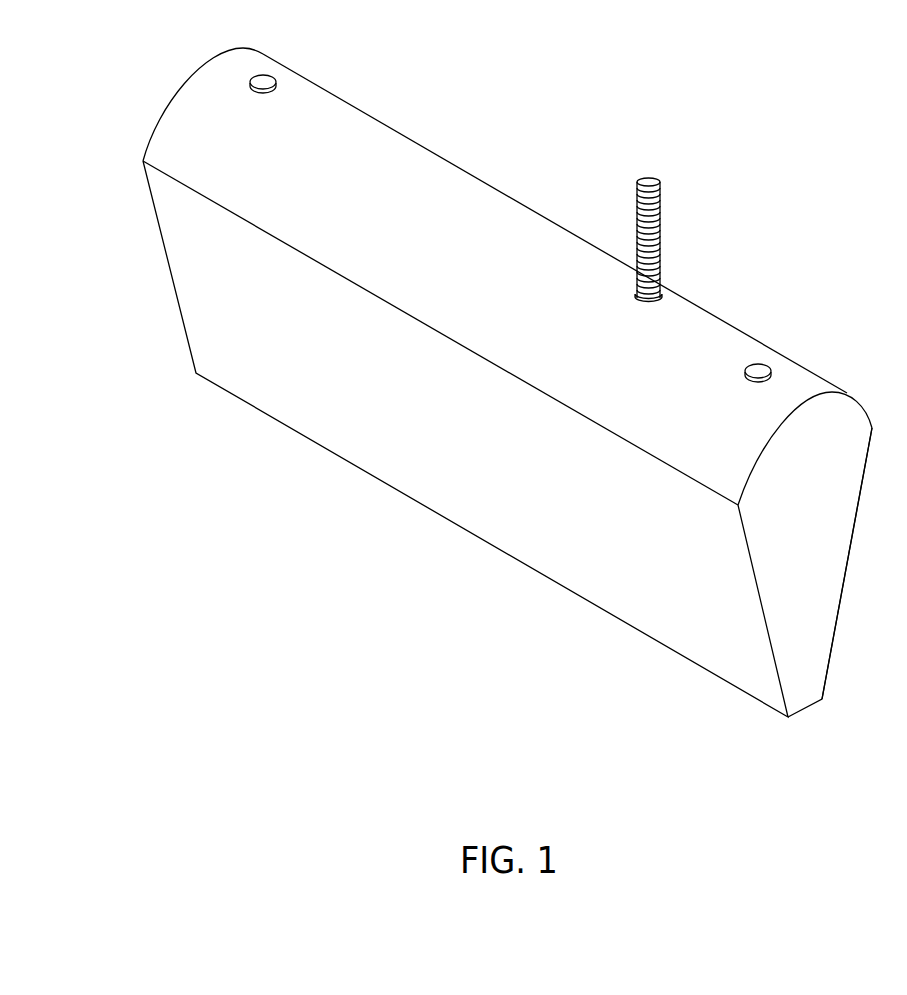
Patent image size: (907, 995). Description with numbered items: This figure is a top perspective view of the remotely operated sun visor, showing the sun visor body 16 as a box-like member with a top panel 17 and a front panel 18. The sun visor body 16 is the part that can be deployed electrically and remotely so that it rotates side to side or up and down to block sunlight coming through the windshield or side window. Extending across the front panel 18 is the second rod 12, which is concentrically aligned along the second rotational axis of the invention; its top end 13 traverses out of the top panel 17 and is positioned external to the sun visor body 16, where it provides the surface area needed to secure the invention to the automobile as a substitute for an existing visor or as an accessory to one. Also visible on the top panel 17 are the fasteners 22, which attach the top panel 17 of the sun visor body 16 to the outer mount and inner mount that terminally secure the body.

The second rod 12 is at (660, 281).
The top end 13 is at (679, 215).
The sun visor body 16 is at (114, 274).
The top panel 17 is at (430, 156).
The front panel 18 is at (843, 593).
The fasteners 22 is at (263, 80).